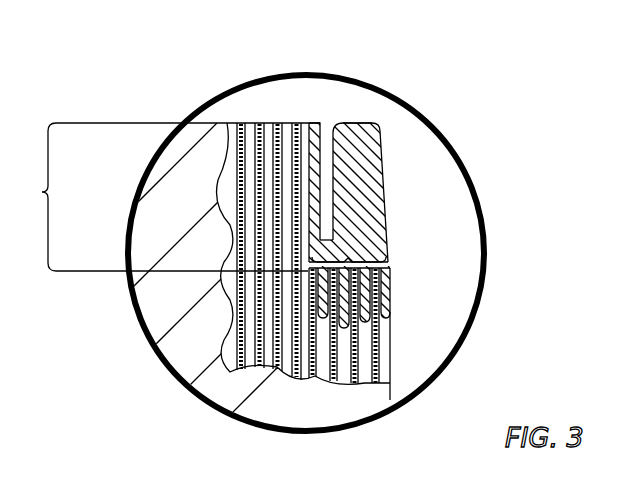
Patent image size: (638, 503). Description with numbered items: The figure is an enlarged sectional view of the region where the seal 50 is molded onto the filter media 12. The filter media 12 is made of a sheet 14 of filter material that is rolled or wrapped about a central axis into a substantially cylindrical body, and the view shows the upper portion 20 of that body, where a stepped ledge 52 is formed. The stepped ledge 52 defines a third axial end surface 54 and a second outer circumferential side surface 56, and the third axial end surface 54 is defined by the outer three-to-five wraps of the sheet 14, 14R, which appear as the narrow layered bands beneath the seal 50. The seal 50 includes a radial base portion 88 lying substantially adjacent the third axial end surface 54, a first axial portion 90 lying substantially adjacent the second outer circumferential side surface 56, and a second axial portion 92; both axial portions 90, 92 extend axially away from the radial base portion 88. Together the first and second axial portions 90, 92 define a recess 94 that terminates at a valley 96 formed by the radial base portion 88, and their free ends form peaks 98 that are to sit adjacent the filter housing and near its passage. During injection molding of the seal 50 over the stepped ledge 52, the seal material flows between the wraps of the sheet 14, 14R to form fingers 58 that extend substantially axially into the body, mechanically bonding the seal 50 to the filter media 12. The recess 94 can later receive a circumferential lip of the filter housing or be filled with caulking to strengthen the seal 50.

The filter media 12 is at (196, 341).
The sheet 14 is at (428, 330).
The outer wraps of the sheet 14R is at (370, 370).
The upper portion 20 is at (402, 370).
The seal 50 is at (324, 165).
The stepped ledge 52 is at (351, 118).
The third axial end surface 54 is at (349, 249).
The second outer circumferential side surface 56 is at (168, 197).
The fingers 58 is at (385, 319).
The radial base portion 88 is at (373, 245).
The first axial portion 90 is at (317, 197).
The second axial portion 92 is at (365, 152).
The recess 94 is at (328, 130).
The valley 96 is at (322, 240).
The peaks 98 is at (317, 124).